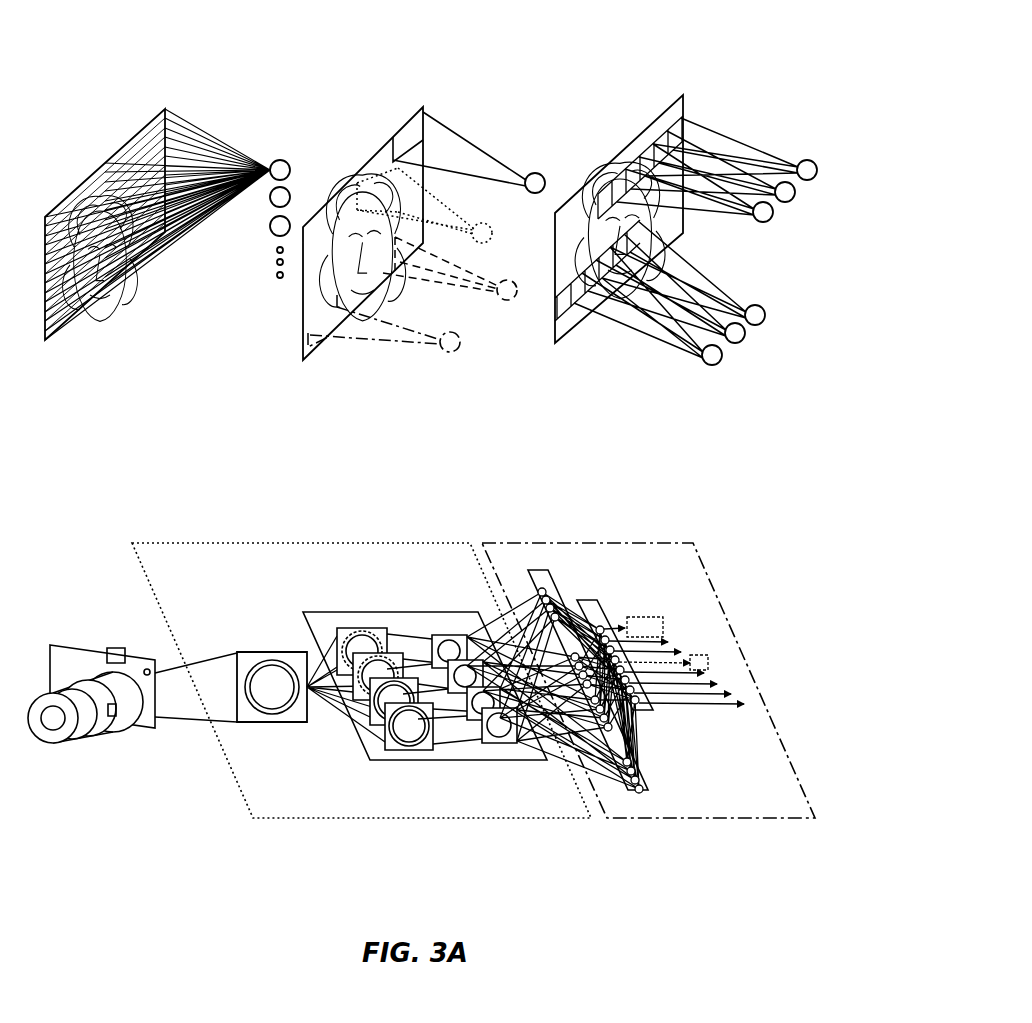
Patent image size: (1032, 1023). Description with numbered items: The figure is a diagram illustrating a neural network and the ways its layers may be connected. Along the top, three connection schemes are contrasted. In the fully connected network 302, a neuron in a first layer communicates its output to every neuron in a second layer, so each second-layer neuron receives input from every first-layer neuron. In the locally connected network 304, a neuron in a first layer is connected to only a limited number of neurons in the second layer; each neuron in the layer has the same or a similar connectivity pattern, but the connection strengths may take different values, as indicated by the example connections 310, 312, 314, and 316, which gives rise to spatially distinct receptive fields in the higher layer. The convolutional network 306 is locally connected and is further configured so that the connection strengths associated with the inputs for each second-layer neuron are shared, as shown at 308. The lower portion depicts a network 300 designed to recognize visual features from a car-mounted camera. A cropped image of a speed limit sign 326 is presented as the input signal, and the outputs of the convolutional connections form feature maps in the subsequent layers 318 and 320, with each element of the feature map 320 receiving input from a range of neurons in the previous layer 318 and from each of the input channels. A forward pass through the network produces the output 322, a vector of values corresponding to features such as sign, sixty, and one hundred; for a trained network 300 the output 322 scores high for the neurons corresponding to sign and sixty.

The network 300 is at (186, 511).
The fully connected network 302 is at (160, 72).
The locally connected network 304 is at (412, 72).
The convolutional network 306 is at (604, 72).
The shared connection strengths 308 is at (685, 280).
The connection strength 310 is at (495, 160).
The connection strength 312 is at (470, 213).
The connection strength 314 is at (468, 290).
The connection strength 316 is at (365, 338).
The feature map layer 318 is at (325, 552).
The feature map layer 320 is at (423, 552).
The output 322 is at (633, 562).
The cropped image of a speed limit sign 326 is at (268, 652).